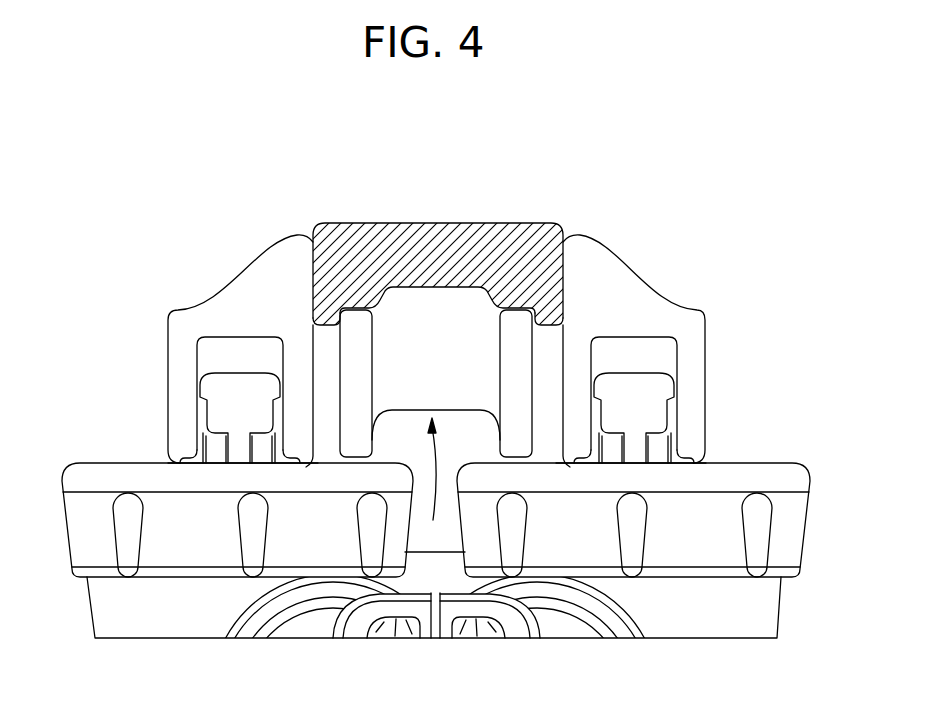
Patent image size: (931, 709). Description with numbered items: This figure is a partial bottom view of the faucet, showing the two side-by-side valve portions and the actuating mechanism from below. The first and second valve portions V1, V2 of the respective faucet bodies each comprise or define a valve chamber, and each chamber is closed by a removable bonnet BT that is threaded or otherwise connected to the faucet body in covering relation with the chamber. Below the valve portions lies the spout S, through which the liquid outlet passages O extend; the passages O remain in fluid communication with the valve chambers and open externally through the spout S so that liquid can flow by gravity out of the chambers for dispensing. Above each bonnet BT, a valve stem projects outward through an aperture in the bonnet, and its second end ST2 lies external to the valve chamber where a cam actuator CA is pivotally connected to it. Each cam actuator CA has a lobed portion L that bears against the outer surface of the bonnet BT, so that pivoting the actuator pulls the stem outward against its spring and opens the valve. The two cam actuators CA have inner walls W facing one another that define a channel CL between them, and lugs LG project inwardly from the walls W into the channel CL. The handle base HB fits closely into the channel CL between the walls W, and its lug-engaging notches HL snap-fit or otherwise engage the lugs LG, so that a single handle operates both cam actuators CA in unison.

The handle base HB is at (432, 240).
The inner wall W is at (314, 259).
The lug-engaging notch HL is at (530, 340).
The cam actuator CA is at (262, 273).
The lug LG is at (540, 380).
The second end of valve stem ST2 is at (217, 383).
The lobed portion L is at (177, 467).
The channel CL is at (431, 482).
The first valve portion V1 is at (103, 600).
The second valve portion V2 is at (763, 607).
The bonnet BT is at (193, 545).
The spout S is at (329, 610).
The liquid outlet passage O is at (378, 630).